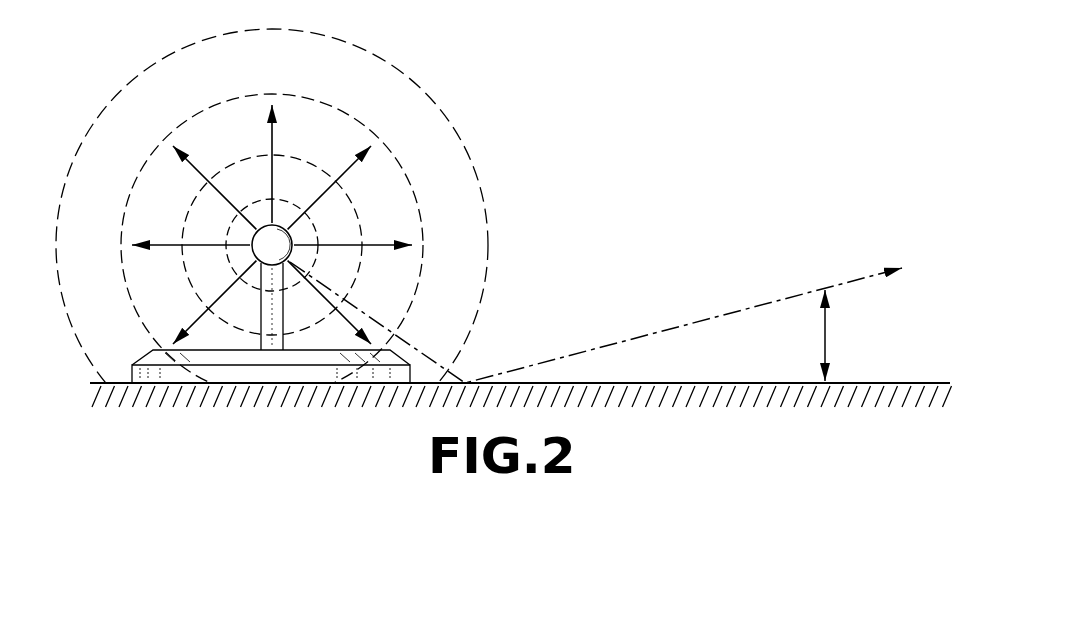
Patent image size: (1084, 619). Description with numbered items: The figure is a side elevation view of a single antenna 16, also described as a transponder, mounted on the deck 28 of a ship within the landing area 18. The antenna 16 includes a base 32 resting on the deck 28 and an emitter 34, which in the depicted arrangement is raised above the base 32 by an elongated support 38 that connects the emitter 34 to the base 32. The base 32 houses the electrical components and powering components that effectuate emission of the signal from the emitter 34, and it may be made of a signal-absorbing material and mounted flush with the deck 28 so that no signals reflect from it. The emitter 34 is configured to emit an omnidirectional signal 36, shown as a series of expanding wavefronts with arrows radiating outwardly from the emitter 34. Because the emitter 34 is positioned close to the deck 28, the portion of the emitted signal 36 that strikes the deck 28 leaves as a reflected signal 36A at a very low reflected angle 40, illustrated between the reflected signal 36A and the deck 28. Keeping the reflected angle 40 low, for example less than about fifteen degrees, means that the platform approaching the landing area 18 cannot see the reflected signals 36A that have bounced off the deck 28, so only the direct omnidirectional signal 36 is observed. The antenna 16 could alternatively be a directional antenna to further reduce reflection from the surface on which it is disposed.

The antenna 16 is at (368, 257).
The landing area 18 is at (521, 376).
The deck 28 is at (665, 383).
The base 32 is at (305, 374).
The emitter 34 is at (291, 238).
The omnidirectional signal 36 is at (167, 53).
The reflected signal 36A is at (733, 312).
The elongated support 38 is at (264, 312).
The reflected angle 40 is at (824, 336).